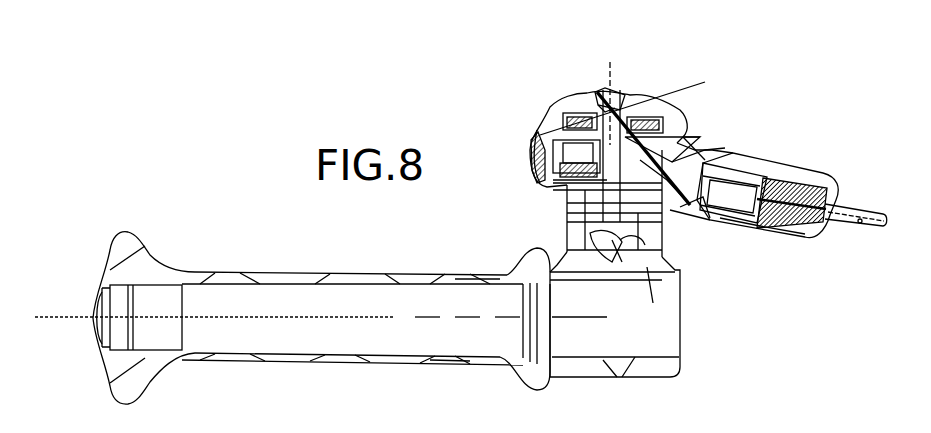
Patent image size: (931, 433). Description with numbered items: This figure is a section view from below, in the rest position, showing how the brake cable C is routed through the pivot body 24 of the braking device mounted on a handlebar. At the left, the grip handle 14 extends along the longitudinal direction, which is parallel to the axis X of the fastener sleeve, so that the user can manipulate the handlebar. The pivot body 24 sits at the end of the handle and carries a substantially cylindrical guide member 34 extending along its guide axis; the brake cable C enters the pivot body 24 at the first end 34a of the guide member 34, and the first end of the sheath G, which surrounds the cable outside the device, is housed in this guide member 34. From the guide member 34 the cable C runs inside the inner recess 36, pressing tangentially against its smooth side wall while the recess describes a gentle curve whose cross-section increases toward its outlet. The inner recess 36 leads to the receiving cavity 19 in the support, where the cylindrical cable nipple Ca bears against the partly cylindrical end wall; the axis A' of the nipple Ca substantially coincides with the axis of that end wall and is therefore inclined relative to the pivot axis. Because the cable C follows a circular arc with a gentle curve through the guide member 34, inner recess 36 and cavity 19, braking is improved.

The grip handle 14 is at (321, 318).
The receiving cavity 19 is at (595, 92).
The pivot body 24 is at (646, 198).
The guide member 34 is at (767, 165).
The first end of the guide member 34a is at (791, 246).
The inner recess 36 is at (693, 136).
The cable nipple Ca is at (617, 90).
The axis of the nipple A' is at (622, 95).
The sheath G is at (856, 191).
The brake cable C is at (869, 236).
The axis of the fastener sleeve X is at (320, 302).